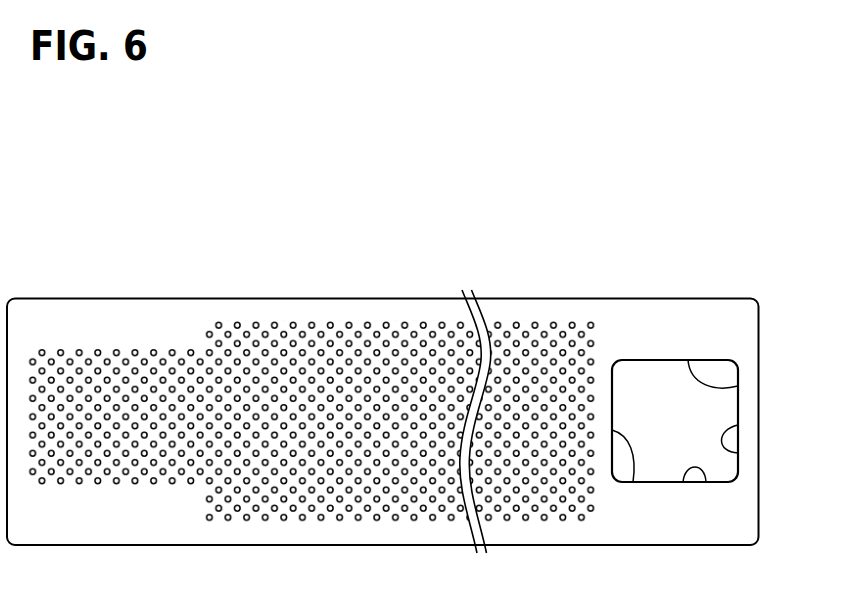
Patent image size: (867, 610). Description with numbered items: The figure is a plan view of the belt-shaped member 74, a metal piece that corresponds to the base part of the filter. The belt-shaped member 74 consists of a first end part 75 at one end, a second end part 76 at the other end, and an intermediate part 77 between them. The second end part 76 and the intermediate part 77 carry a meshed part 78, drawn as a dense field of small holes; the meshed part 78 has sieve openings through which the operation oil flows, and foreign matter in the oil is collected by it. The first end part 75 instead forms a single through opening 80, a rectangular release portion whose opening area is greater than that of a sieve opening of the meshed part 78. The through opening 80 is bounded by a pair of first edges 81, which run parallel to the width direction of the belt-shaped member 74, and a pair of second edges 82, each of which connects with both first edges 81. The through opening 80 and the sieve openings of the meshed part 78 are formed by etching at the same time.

The belt-shaped member 74 is at (285, 298).
The first end part 75 is at (680, 320).
The second end part 76 is at (115, 320).
The intermediate part 77 is at (417, 312).
The meshed part 78 is at (116, 422).
The through opening 80 is at (651, 360).
The first edges 81 is at (738, 453).
The second edges 82 is at (738, 386).